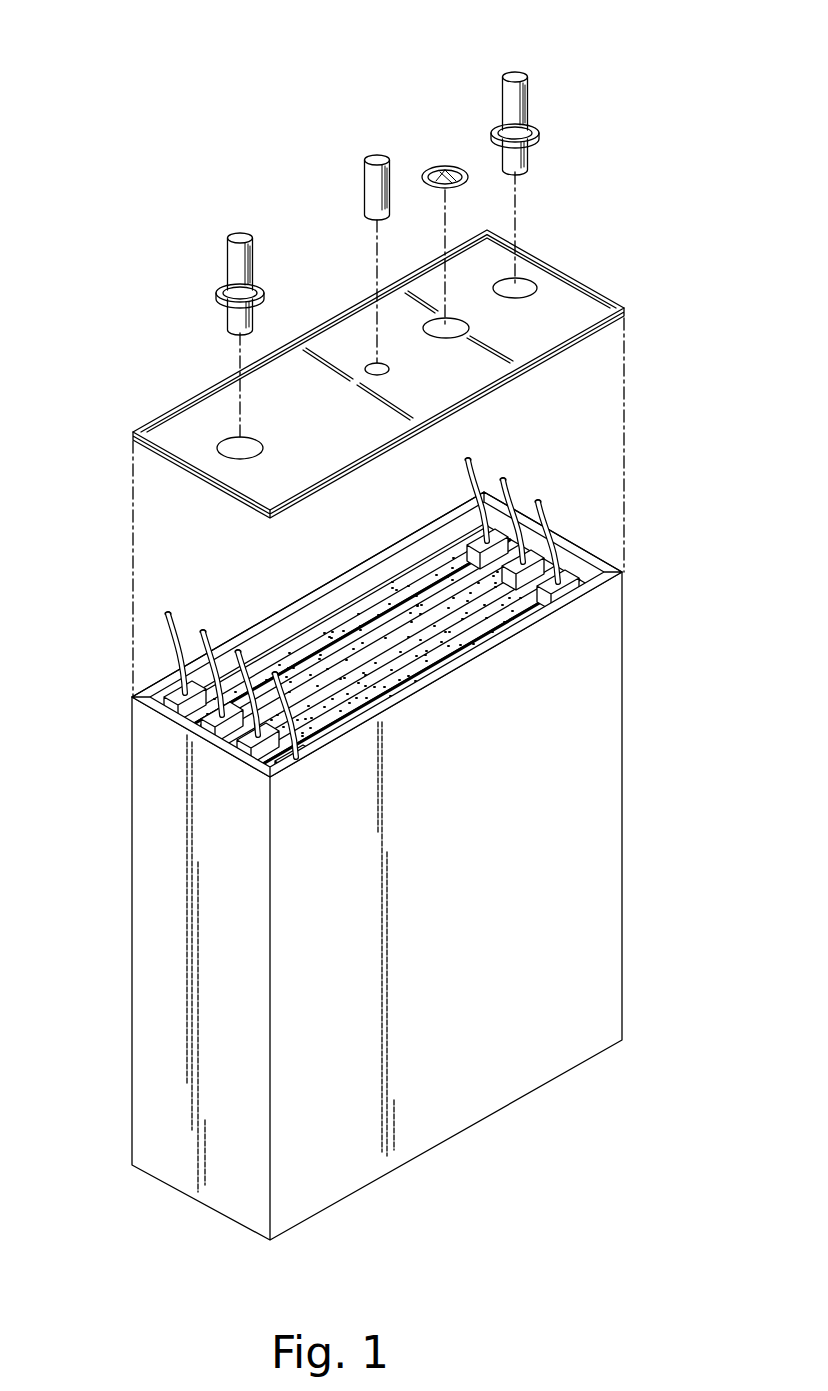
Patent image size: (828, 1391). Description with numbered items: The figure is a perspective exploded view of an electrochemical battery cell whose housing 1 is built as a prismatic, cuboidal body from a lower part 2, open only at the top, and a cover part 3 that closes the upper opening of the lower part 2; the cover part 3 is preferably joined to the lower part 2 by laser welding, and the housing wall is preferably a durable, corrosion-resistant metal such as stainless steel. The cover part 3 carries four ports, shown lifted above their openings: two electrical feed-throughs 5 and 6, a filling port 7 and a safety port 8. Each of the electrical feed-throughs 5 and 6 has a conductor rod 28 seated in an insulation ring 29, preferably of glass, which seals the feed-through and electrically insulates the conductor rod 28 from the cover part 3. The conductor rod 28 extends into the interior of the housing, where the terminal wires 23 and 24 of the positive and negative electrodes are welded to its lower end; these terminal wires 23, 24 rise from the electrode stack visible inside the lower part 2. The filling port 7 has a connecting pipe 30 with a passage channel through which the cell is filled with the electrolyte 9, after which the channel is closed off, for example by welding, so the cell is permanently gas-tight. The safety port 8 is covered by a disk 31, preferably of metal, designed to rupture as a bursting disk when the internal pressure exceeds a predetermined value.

The housing 1 is at (164, 922).
The lower part 2 is at (622, 733).
The cover part 3 is at (370, 345).
The electrical feed-through 5 is at (214, 261).
The electrical feed-through 6 is at (490, 92).
The filling port 7 is at (351, 150).
The safety port 8 is at (470, 328).
The electrolyte 9 is at (343, 646).
The terminal wire 23 is at (555, 541).
The terminal wire 24 is at (163, 637).
The conductor rod 28 is at (250, 233).
The insulation ring 29 is at (217, 291).
The connecting pipe 30 is at (379, 156).
The disk 31 is at (455, 166).